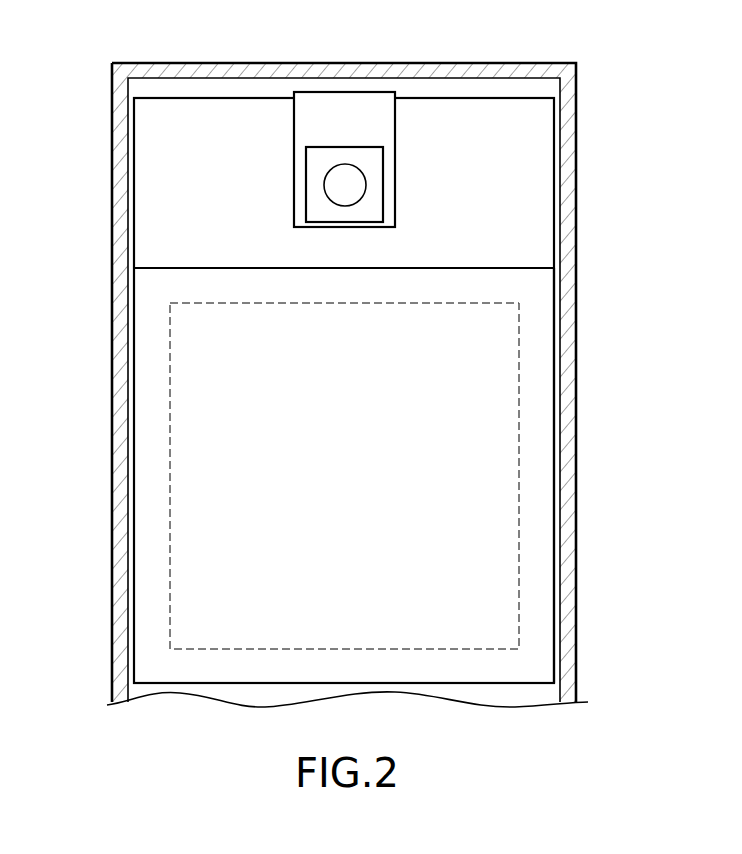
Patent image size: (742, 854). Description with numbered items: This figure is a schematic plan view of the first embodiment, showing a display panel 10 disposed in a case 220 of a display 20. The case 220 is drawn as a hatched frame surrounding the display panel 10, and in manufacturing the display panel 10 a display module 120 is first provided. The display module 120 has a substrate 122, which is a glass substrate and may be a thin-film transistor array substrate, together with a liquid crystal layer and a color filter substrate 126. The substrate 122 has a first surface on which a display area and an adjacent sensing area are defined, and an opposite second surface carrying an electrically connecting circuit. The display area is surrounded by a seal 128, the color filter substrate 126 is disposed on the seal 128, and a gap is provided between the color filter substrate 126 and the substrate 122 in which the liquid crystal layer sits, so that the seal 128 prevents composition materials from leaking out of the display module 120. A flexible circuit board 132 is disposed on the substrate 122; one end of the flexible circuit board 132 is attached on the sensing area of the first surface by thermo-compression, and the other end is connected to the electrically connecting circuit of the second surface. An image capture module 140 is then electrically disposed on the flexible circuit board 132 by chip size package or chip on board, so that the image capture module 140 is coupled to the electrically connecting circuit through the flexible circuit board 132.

The display panel 10 is at (527, 90).
The display 20 is at (116, 49).
The display module 120 is at (508, 380).
The substrate 122 is at (525, 180).
The color filter substrate 126 is at (498, 540).
The seal 128 is at (545, 597).
The flexible circuit board 132 is at (368, 103).
The image capture module 140 is at (333, 139).
The case 220 is at (571, 430).